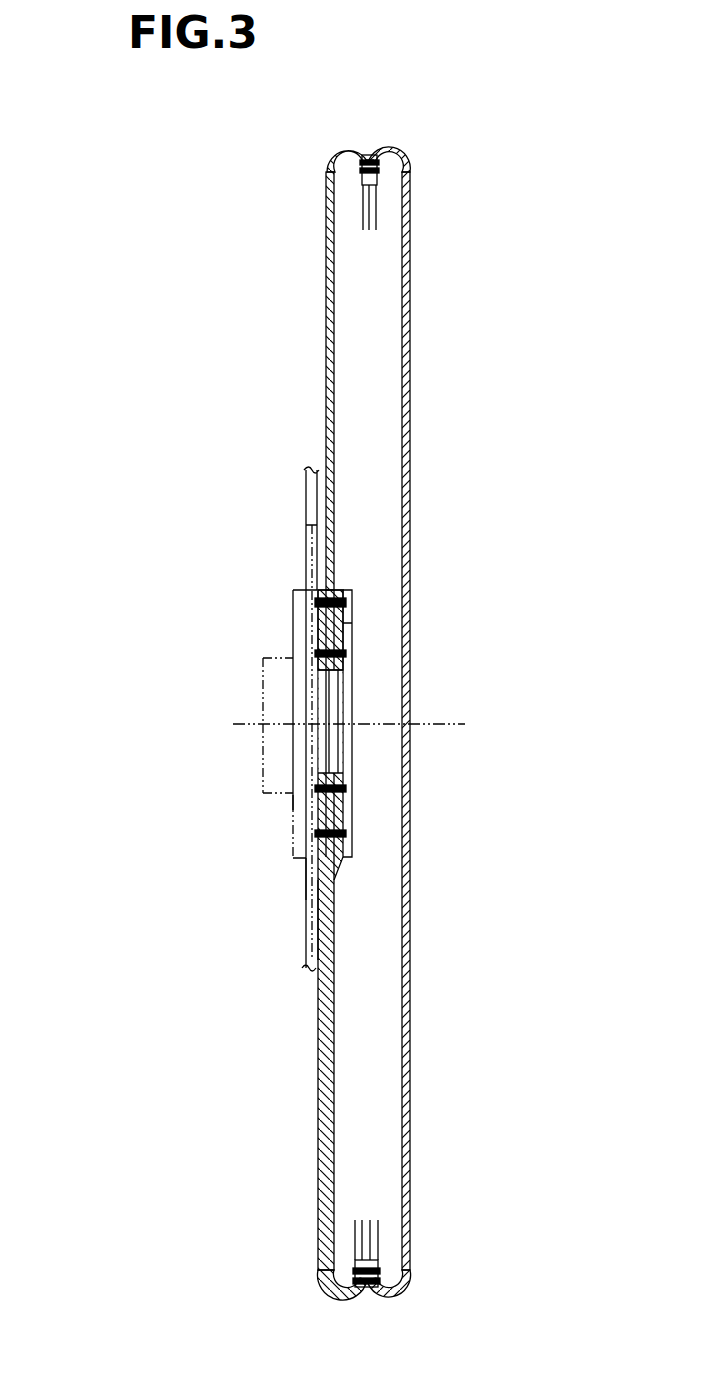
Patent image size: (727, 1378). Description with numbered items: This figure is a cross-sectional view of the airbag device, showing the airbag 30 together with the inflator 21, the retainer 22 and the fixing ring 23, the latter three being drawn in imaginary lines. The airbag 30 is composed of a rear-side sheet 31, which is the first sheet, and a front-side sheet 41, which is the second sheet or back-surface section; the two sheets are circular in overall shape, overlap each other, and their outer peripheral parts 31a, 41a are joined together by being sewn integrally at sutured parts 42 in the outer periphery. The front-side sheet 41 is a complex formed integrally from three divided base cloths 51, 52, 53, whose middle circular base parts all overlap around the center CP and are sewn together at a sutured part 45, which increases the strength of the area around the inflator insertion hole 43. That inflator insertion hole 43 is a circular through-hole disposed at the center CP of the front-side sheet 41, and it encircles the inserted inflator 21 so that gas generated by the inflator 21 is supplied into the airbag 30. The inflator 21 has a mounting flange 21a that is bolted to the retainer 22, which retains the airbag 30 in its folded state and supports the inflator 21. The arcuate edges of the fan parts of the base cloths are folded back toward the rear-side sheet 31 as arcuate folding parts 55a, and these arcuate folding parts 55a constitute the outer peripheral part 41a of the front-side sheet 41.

The airbag 30 is at (113, 232).
The rear-side sheet 31 is at (411, 416).
The outer peripheral part of rear-side sheet 31a is at (389, 148).
The front-side sheet 41 is at (150, 452).
The outer peripheral part of front-side sheet 41a is at (358, 148).
The sutured part 42 is at (378, 176).
The inflator insertion hole 43 is at (341, 684).
The sutured part 45 is at (317, 653).
The base cloth 51 is at (324, 523).
The base cloth 52 is at (345, 612).
The base cloth 53 is at (317, 598).
The arcuate folding part 55a is at (362, 172).
The inflator 21 is at (263, 742).
The mounting flange 21a is at (293, 803).
The retainer 22 is at (306, 878).
The fixing ring 23 is at (355, 842).
The center CP is at (460, 722).